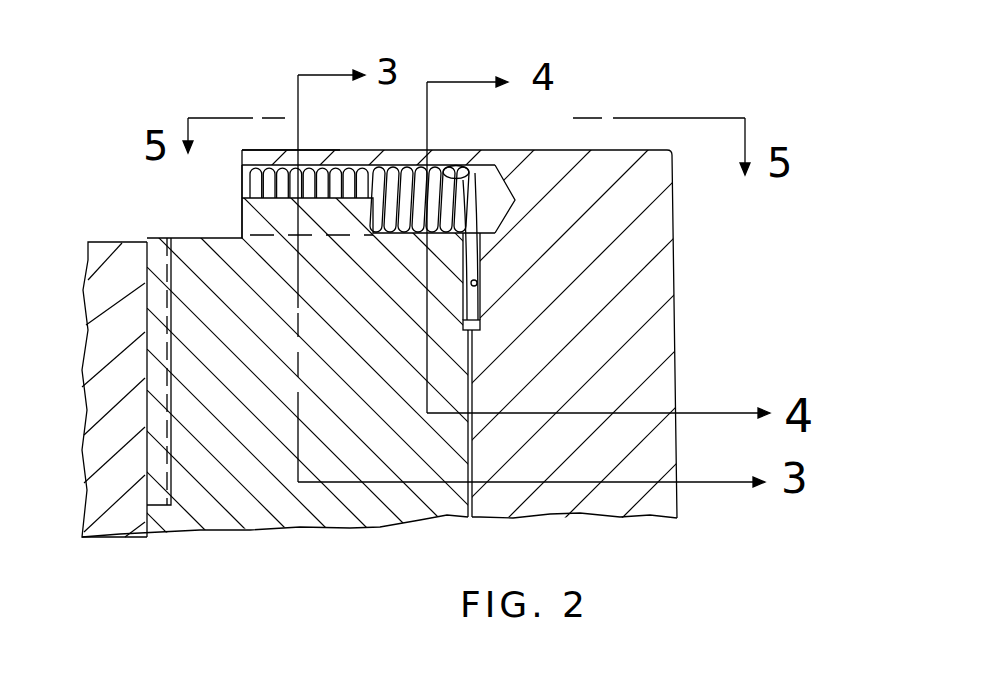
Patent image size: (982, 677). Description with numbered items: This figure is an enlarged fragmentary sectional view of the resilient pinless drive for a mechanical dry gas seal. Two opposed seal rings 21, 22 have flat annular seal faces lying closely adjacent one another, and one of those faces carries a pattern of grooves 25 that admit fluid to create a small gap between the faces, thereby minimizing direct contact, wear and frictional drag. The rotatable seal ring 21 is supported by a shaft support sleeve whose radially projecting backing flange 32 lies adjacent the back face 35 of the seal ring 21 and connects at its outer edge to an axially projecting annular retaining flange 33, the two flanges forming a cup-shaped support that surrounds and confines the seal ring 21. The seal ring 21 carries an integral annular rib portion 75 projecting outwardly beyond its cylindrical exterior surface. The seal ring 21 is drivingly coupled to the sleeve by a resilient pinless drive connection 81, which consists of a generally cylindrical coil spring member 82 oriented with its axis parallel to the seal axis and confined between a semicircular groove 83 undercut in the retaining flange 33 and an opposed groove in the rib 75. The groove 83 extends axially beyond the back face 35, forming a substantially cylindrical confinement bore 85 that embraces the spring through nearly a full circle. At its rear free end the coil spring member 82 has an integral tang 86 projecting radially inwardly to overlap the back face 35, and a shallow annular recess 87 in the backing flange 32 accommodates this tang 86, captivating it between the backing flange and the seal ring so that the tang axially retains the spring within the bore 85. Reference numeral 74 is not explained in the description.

The seal ring 21 is at (232, 508).
The seal ring 22 is at (113, 527).
The grooves 25 is at (152, 241).
The backing flange 32 is at (605, 498).
The annular retaining flange 33 is at (440, 155).
The back face 35 is at (470, 473).
The pin 74 is at (318, 166).
The annular rib portion 75 is at (262, 216).
The resilient pinless drive connection 81 is at (288, 143).
The coil spring member 82 is at (378, 172).
The groove 83 is at (343, 172).
The confinement bore 85 is at (452, 174).
The tang 86 is at (480, 252).
The shallow annular recess 87 is at (477, 285).